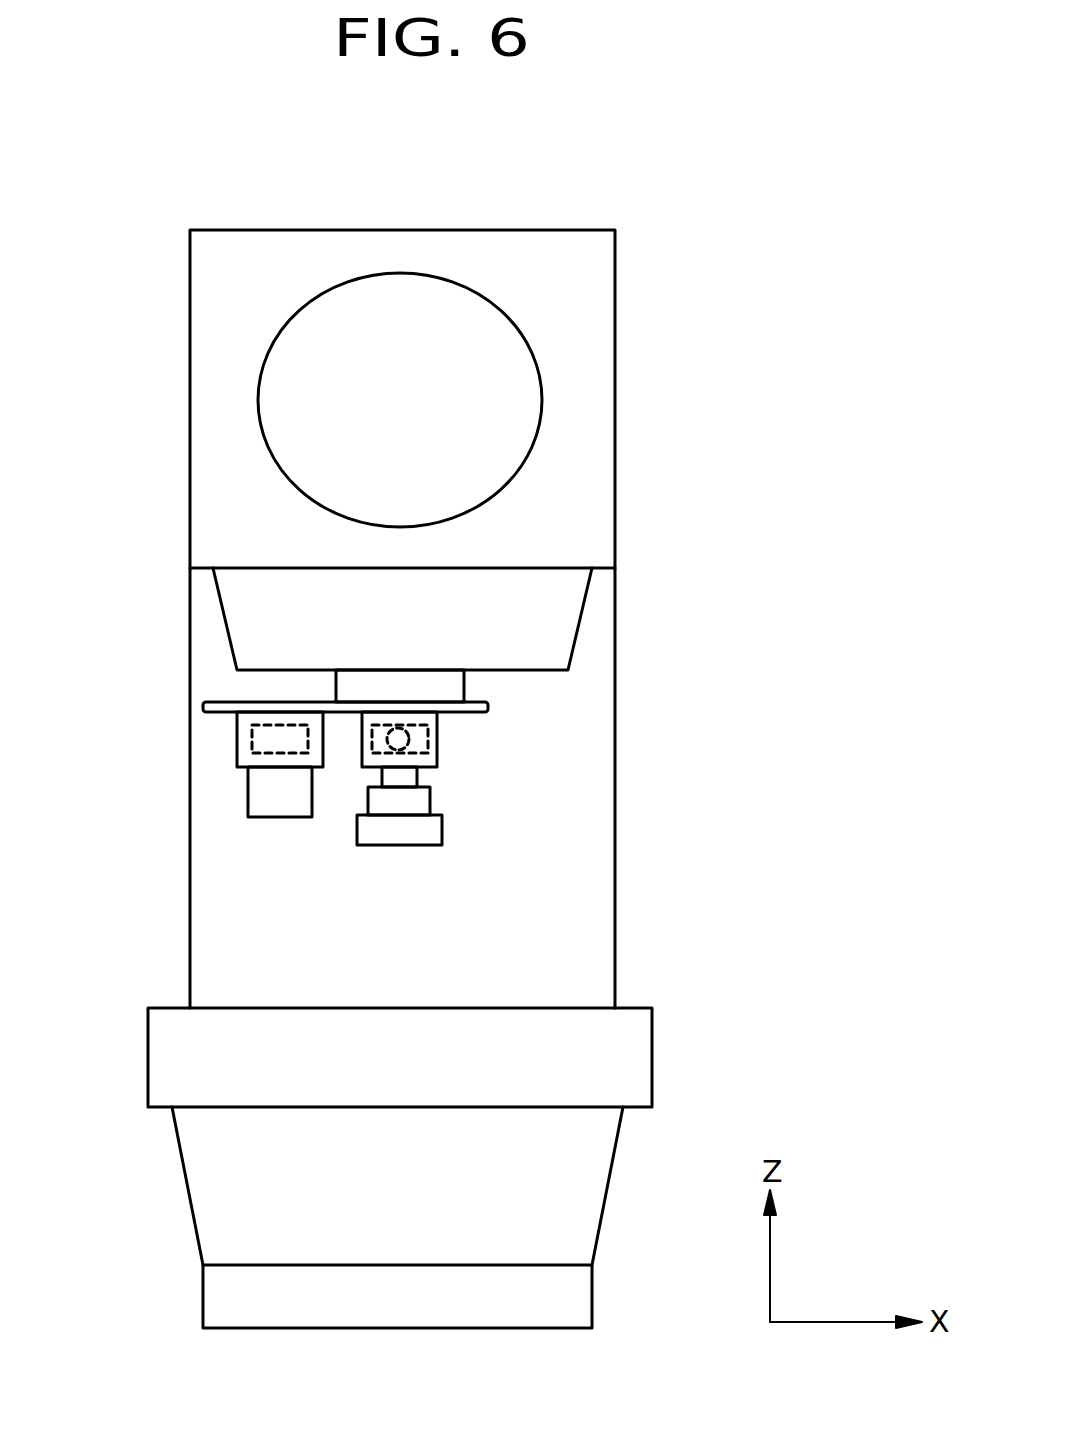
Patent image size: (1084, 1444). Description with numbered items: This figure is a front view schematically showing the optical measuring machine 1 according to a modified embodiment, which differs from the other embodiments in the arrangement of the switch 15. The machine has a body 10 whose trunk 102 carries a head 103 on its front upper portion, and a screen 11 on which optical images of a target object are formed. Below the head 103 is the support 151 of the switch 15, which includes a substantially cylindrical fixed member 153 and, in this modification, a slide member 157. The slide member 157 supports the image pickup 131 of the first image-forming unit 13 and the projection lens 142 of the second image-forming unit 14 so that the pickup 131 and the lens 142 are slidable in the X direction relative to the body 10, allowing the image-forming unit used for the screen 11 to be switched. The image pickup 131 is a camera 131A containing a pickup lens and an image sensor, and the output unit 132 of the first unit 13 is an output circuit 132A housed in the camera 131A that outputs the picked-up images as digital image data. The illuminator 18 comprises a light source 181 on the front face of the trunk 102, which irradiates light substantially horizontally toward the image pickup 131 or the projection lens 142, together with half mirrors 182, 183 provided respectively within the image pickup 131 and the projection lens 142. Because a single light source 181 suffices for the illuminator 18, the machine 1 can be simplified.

The optical measuring machine 1 is at (132, 214).
The body 10 is at (398, 619).
The head 103 is at (203, 462).
The trunk 102 is at (598, 907).
The screen 11 is at (402, 280).
The switch 15 is at (548, 675).
The support 151 is at (498, 673).
The fixed member 153 is at (470, 688).
The slide member 157 is at (488, 706).
The first image-forming unit 13 is at (187, 814).
The image pickup 131 is at (248, 795).
The camera 131A is at (98, 864).
The output unit 132 is at (187, 734).
The output circuit 132A is at (98, 777).
The half mirror 182 is at (252, 740).
The second image-forming unit 14 is at (533, 845).
The projection lens 142 is at (442, 830).
The illuminator 18 is at (536, 758).
The light source 181 is at (437, 732).
The half mirror 183 is at (430, 765).